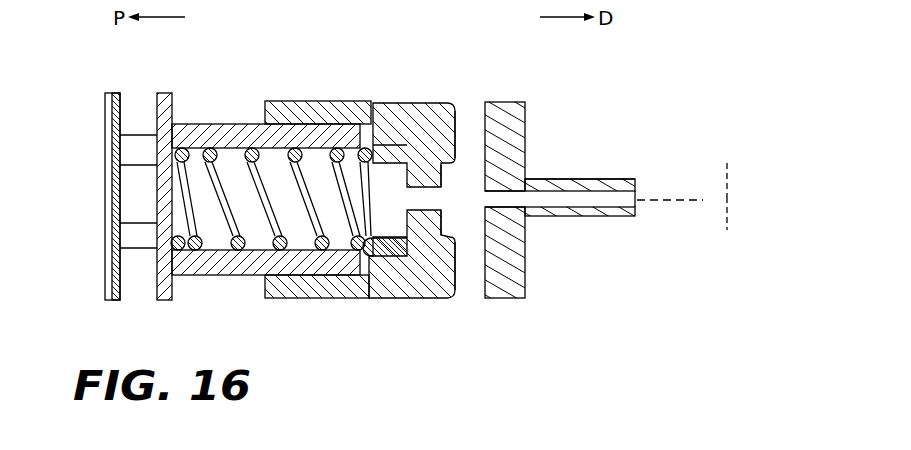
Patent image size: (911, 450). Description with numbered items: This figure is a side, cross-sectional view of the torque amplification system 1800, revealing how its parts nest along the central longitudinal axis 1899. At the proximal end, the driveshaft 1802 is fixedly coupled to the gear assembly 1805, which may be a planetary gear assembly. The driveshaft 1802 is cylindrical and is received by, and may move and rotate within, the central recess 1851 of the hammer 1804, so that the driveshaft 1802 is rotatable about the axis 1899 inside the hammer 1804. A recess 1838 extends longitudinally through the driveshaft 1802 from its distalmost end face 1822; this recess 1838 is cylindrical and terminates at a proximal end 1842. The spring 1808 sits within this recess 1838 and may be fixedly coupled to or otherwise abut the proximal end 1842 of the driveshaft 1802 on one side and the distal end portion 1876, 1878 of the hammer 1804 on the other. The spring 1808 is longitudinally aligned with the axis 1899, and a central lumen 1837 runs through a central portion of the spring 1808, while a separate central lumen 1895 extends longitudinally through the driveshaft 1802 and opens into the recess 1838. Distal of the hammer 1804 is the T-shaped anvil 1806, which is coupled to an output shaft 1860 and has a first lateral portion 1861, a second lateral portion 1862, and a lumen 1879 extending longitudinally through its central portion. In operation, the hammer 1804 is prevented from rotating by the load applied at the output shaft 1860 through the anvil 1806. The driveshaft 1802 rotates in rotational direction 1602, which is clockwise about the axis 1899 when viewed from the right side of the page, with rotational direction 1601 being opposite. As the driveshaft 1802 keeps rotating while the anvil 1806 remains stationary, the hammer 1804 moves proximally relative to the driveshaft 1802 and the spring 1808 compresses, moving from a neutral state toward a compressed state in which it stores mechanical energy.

The torque amplification system 1800 is at (639, 65).
The driveshaft 1802 is at (200, 142).
The hammer 1804 is at (292, 110).
The gear assembly 1805 is at (136, 150).
The anvil 1806 is at (518, 239).
The spring 1808 is at (252, 150).
The distalmost end face 1822 is at (392, 152).
The central lumen 1837 is at (477, 178).
The recess 1838 is at (296, 203).
The proximal end 1842 is at (182, 233).
The central recess 1851 is at (406, 270).
The output shaft 1860 is at (615, 209).
The first lateral portion 1861 is at (513, 113).
The second lateral portion 1862 is at (510, 265).
The distal end portion 1876 is at (450, 198).
The distal end portion 1878 is at (368, 245).
The lumen 1879 is at (610, 190).
The central lumen 1895 is at (98, 193).
The central longitudinal axis 1899 is at (684, 192).
The rotational direction 1601 is at (736, 238).
The rotational direction 1602 is at (733, 154).